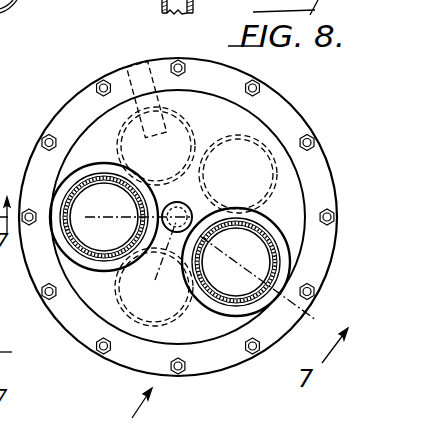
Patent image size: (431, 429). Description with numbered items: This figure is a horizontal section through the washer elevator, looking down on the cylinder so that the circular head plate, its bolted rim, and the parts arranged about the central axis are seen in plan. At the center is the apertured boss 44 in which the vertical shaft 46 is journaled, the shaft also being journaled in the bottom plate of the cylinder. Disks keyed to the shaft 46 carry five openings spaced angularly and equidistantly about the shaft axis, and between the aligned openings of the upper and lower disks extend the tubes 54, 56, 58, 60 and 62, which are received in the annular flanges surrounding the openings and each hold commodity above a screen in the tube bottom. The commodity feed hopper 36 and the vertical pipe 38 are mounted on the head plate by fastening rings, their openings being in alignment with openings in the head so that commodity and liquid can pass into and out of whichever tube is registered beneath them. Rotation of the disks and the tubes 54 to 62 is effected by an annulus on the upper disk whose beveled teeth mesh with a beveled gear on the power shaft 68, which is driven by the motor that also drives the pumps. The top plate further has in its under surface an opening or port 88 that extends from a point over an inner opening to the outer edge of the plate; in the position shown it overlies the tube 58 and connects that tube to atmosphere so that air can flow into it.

The commodity feed hopper 36 is at (99, 253).
The vertical pipe 38 is at (258, 230).
The apertured boss 44 is at (190, 203).
The vertical shaft 46 is at (154, 287).
The tube 54 is at (263, 265).
The tube 56 is at (253, 156).
The tube 58 is at (162, 117).
The tube 60 is at (85, 199).
The tube 62 is at (140, 310).
The power shaft 68 is at (18, 355).
The opening or port 88 is at (133, 78).